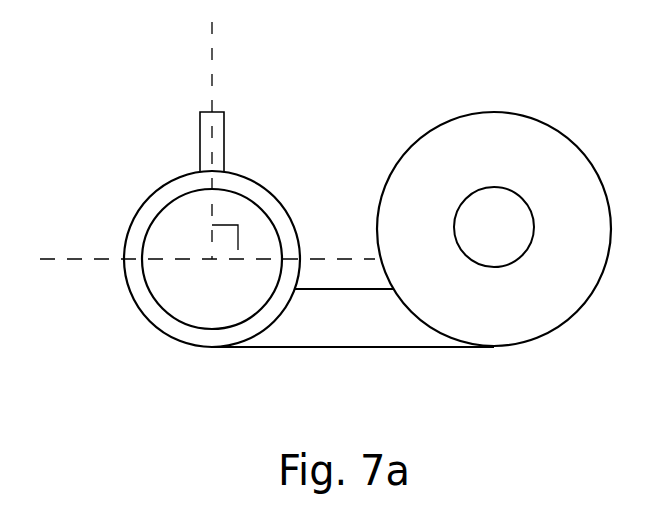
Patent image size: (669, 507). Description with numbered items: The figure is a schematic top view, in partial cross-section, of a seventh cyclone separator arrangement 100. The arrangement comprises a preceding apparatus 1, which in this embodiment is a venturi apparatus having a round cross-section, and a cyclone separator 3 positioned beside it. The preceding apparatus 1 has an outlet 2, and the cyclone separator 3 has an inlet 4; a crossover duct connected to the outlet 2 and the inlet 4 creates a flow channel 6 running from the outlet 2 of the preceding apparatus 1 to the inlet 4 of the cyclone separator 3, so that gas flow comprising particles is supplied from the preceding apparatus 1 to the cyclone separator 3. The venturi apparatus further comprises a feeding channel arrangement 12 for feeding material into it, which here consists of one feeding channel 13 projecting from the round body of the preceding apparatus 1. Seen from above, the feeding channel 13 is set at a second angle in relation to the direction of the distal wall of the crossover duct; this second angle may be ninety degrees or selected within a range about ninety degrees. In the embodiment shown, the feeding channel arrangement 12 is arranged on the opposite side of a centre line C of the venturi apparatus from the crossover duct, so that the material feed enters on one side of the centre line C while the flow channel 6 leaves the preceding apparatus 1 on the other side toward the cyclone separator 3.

The preceding apparatus 1 is at (193, 333).
The outlet 2 is at (267, 317).
The cyclone separator 3 is at (458, 130).
The inlet 4 is at (430, 305).
The flow channel 6 is at (365, 329).
The feeding channel arrangement 12 is at (285, 95).
The feeding channel 13 is at (200, 137).
The cyclone separator arrangement 100 is at (538, 380).
The centre line C is at (80, 259).